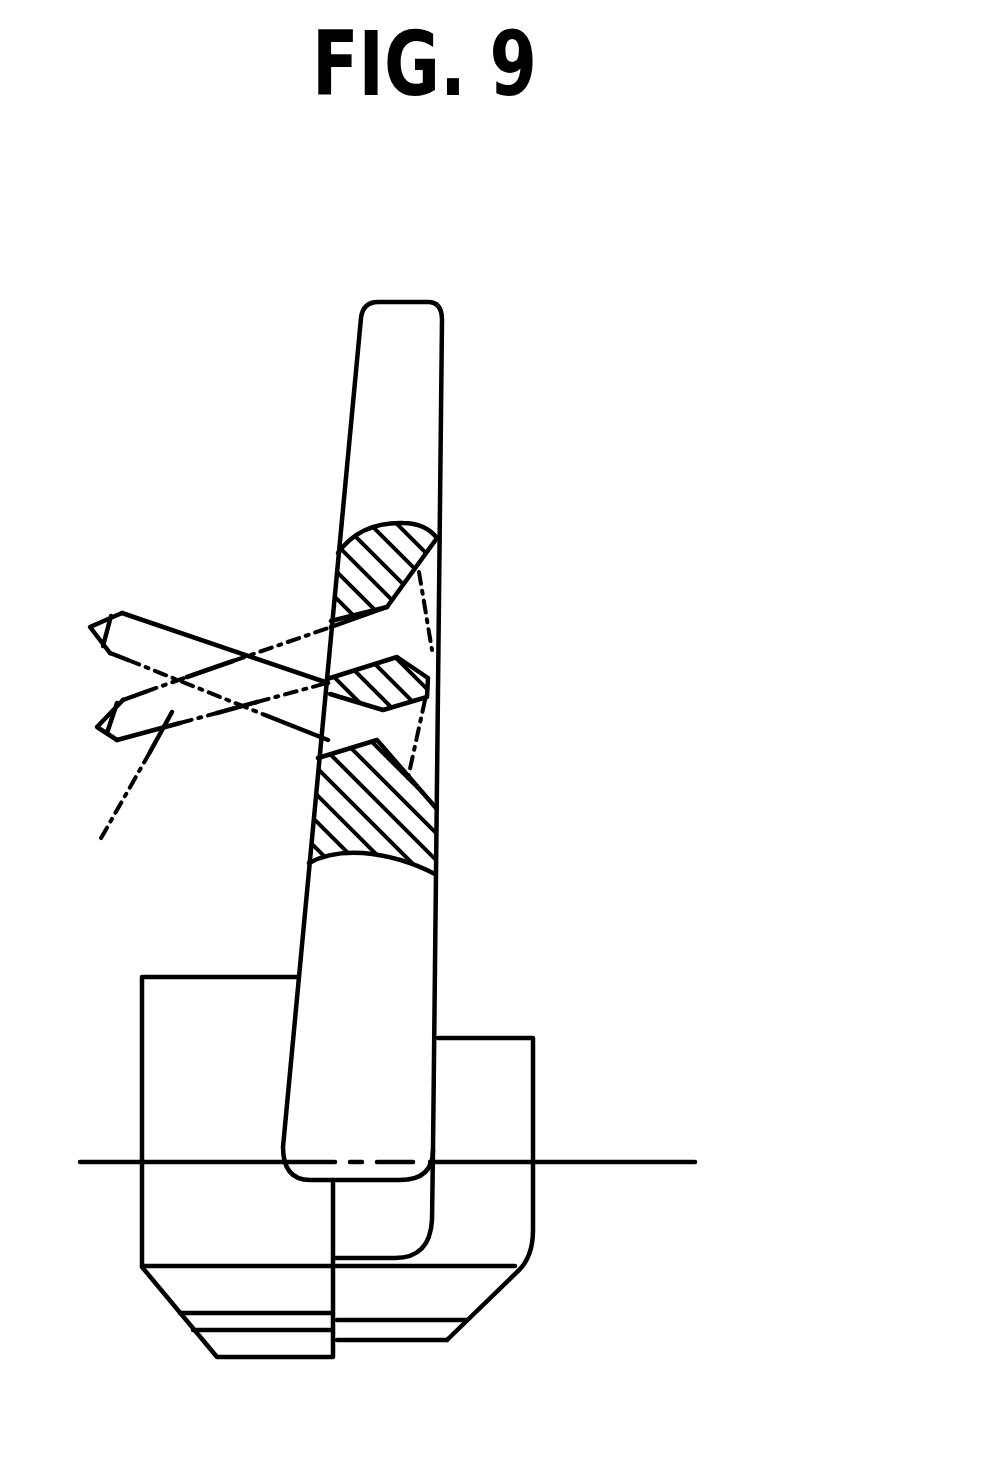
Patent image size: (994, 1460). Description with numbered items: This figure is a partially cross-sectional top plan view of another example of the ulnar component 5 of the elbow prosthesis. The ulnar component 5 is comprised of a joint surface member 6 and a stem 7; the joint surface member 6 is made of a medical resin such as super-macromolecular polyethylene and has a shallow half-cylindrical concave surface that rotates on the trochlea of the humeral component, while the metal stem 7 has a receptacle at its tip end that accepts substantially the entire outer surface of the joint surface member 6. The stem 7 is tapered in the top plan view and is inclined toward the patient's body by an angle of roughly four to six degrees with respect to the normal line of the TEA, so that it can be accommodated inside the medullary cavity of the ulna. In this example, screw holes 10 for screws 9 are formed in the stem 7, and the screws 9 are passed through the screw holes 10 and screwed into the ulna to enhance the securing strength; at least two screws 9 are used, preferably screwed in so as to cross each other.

The ulnar component 5 is at (483, 870).
The joint surface member 6 is at (517, 1082).
The stem 7 is at (440, 675).
The screws 9 is at (177, 643).
The screw holes 10 is at (352, 640).
The element TEA is at (630, 1158).